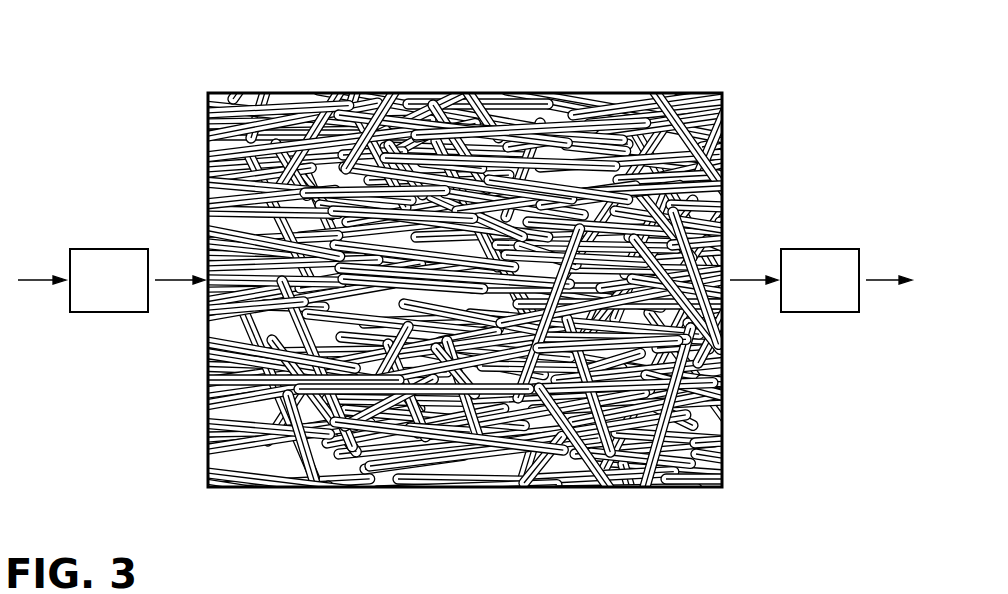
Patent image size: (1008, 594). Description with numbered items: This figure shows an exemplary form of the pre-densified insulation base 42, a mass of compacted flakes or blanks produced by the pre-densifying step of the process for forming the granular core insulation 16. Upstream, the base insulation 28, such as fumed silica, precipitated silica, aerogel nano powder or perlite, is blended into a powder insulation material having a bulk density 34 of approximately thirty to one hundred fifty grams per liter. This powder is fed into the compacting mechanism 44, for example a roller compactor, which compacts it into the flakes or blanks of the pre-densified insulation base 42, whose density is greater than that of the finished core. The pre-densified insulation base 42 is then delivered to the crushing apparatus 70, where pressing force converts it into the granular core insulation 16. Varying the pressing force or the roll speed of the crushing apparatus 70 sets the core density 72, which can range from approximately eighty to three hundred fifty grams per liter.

The pre-densified insulation base 42 is at (508, 91).
The compacting mechanism 44 is at (100, 293).
The crushing apparatus 70 is at (812, 293).
The base insulation 28 is at (28, 278).
The bulk density 34 is at (40, 283).
The core density 72 is at (882, 277).
The granular core insulation 16 is at (872, 283).